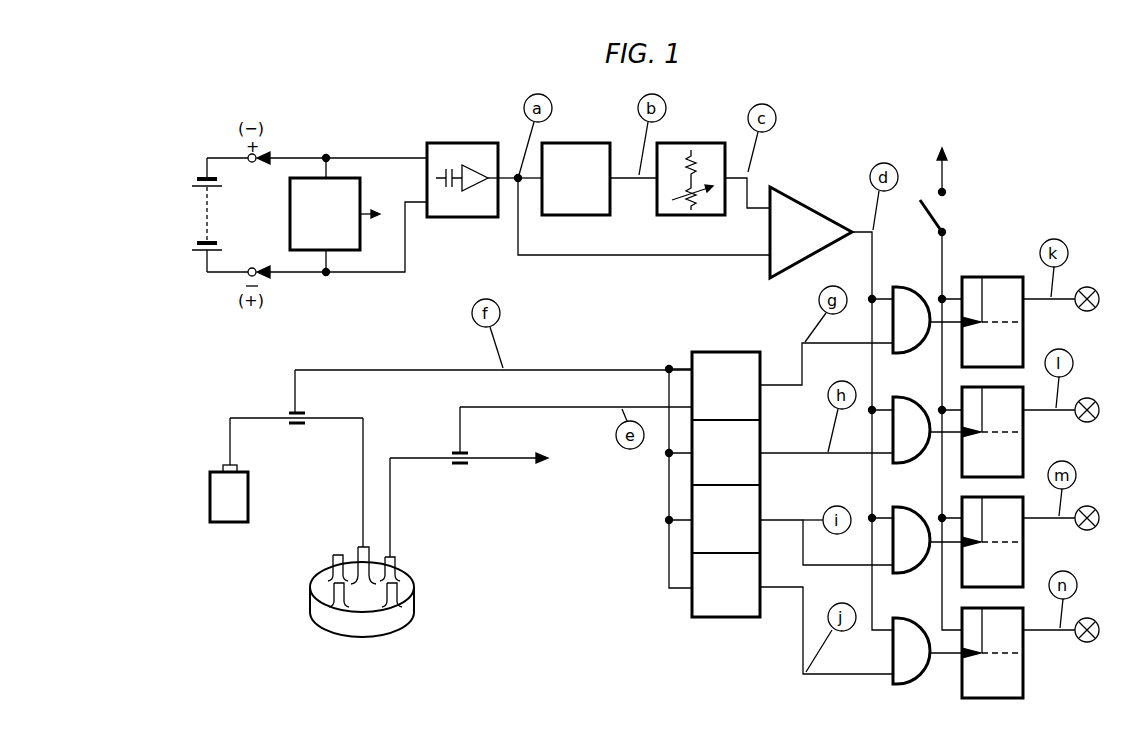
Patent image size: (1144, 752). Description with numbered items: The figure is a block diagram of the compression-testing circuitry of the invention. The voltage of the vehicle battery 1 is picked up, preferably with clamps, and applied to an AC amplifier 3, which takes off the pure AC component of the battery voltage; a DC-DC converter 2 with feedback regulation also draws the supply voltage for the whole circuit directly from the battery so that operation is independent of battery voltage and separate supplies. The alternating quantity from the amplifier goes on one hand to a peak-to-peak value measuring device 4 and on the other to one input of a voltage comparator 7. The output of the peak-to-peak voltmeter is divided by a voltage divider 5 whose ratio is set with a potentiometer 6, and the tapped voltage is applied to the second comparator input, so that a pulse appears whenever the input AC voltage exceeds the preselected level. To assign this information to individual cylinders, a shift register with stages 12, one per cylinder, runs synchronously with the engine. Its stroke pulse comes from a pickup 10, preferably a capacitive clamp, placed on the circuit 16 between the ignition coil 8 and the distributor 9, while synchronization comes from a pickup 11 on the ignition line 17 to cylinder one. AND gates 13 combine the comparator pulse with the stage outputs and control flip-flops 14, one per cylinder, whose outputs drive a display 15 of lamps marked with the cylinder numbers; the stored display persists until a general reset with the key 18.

The battery 1 is at (204, 215).
The DC-DC converter 2 is at (335, 205).
The AC amplifier 3 is at (453, 153).
The peak-to-peak value measuring device 4 is at (571, 160).
The voltage divider 5 is at (680, 160).
The potentiometer 6 is at (690, 203).
The voltage comparator 7 is at (808, 235).
The ignition coil 8 is at (230, 492).
The distributor 9 is at (343, 618).
The pickup 10 is at (292, 411).
The pickup 11 is at (455, 451).
The shift register stage 12 is at (740, 394).
The AND gate 13 is at (903, 306).
The flip-flop 14 is at (1000, 343).
The display 15 is at (1096, 292).
The circuit 16 is at (343, 416).
The ignition line 17 is at (515, 443).
The reset key 18 is at (944, 212).